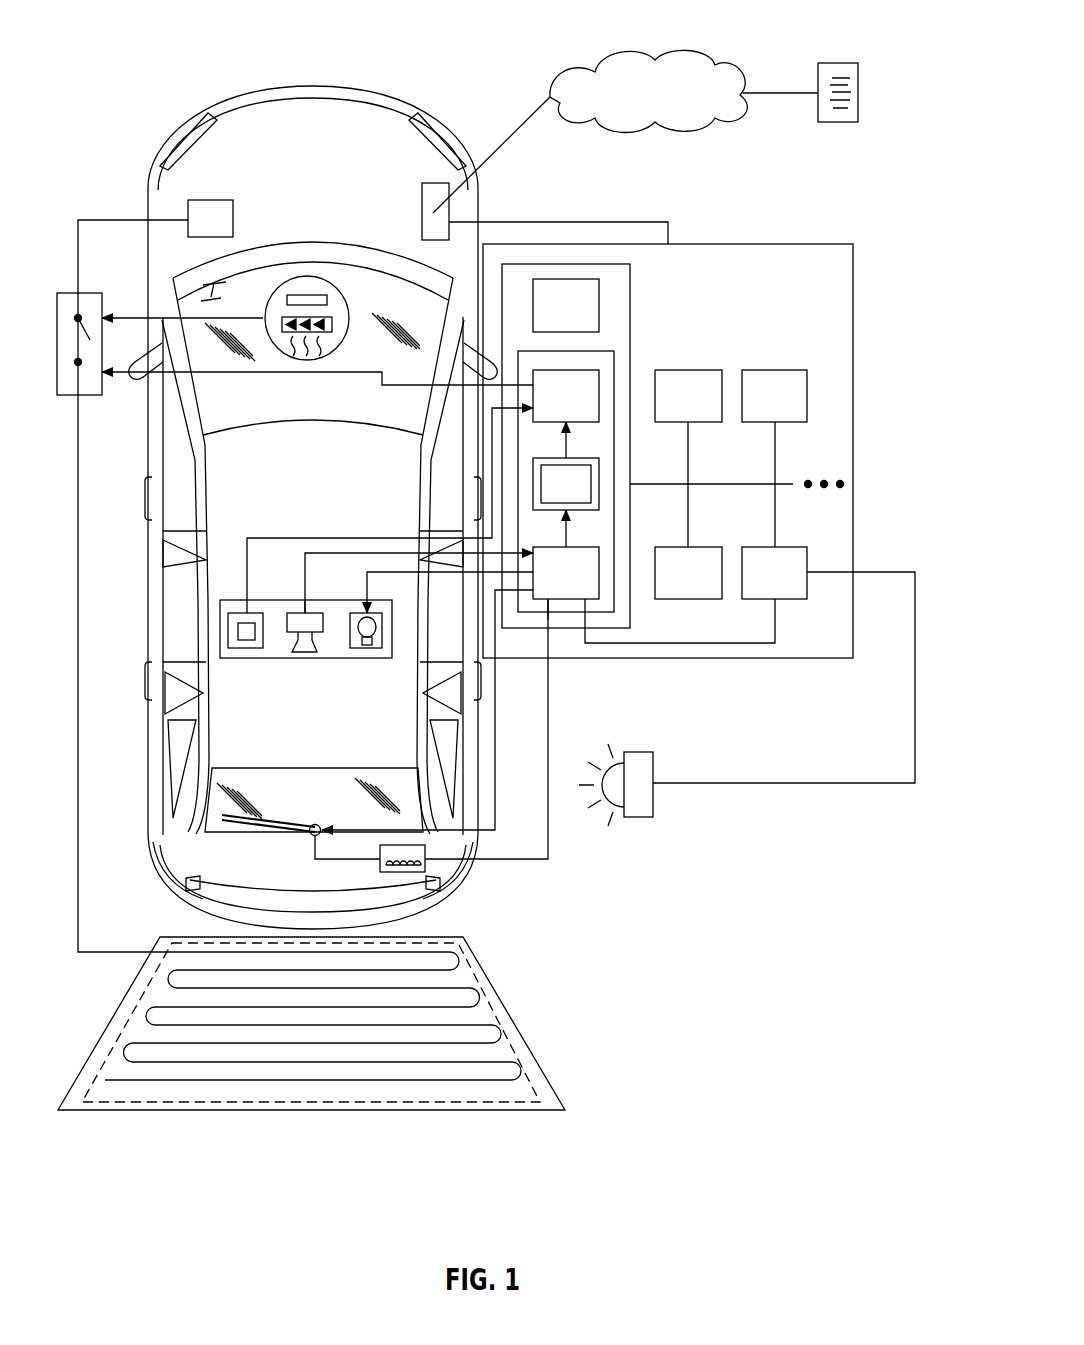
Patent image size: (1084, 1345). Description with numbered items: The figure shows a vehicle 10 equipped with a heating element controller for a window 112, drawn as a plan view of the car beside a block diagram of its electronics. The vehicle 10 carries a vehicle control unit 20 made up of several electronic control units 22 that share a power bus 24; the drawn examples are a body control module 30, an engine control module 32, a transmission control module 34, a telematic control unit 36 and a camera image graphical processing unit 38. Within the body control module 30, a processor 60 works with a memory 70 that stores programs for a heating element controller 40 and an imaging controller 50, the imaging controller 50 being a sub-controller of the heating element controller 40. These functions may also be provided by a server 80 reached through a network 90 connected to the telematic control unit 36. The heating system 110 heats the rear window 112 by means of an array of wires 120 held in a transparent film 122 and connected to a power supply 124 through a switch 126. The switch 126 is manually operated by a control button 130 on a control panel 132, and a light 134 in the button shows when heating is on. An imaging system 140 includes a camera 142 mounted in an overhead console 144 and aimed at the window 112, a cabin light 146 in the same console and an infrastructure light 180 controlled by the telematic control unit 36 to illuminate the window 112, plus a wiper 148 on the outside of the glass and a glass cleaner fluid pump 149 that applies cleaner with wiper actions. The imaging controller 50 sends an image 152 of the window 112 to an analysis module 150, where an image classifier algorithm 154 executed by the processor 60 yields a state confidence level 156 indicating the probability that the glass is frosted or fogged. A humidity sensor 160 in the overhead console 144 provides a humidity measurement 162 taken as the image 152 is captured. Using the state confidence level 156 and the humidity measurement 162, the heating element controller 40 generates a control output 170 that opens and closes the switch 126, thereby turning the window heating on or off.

The vehicle 10 is at (148, 38).
The vehicle control unit 20 is at (870, 270).
The electronic control units 22 is at (790, 628).
The power bus 24 is at (790, 484).
The body control module 30 is at (632, 292).
The engine control module 32 is at (788, 410).
The transmission control module 34 is at (702, 587).
The telematic control unit 36 is at (788, 587).
The camera image graphical processing unit 38 is at (702, 410).
The heating element controller 40 is at (580, 410).
The imaging controller 50 is at (580, 587).
The processor 60 is at (580, 319).
The memory 70 is at (560, 605).
The server 80 is at (837, 63).
The network 90 is at (688, 55).
The heating system 110 is at (122, 212).
The window 112 is at (350, 838).
The array of wires 120 is at (448, 1080).
The transparent film 122 is at (333, 1103).
The power supply 124 is at (231, 232).
The switch 126 is at (88, 293).
The control button 130 is at (288, 275).
The control panel 132 is at (372, 287).
The light 134 is at (305, 293).
The imaging system 140 is at (375, 678).
The camera 142 is at (295, 613).
The overhead console 144 is at (305, 658).
The light 146 is at (365, 658).
The wiper 148 is at (280, 832).
The glass cleaner fluid pump 149 is at (425, 862).
The analysis module 150 is at (600, 483).
The image 152 is at (368, 553).
The image classifier algorithm 154 is at (586, 497).
The state confidence level 156 is at (570, 442).
The humidity sensor 160 is at (247, 658).
The humidity measurement 162 is at (262, 538).
The control output 170 is at (335, 372).
The light 180 is at (637, 820).